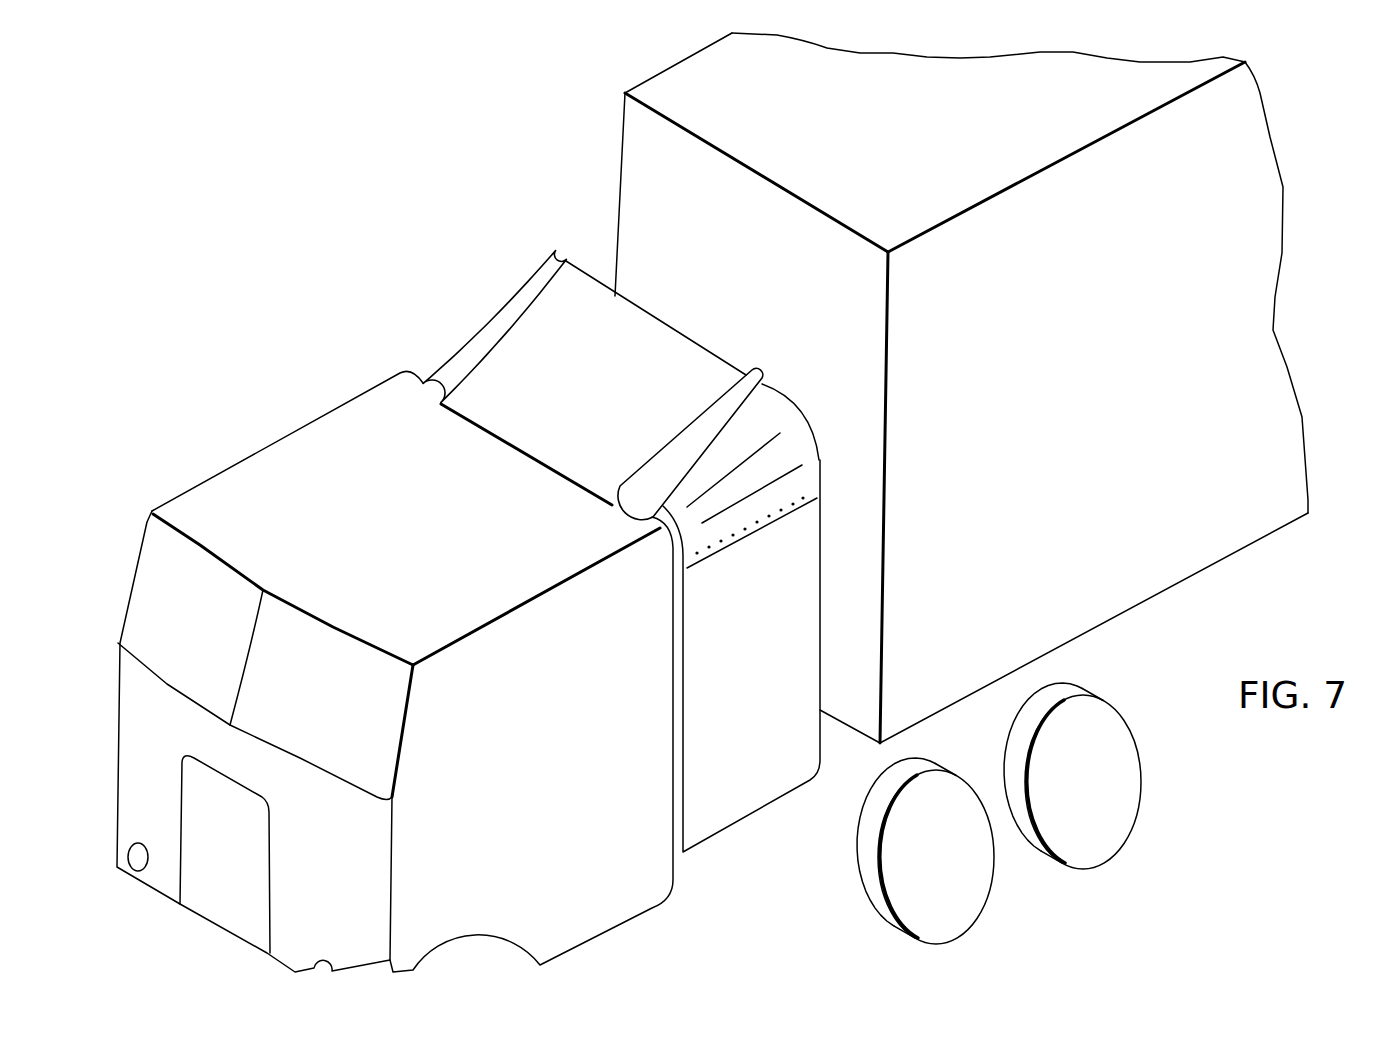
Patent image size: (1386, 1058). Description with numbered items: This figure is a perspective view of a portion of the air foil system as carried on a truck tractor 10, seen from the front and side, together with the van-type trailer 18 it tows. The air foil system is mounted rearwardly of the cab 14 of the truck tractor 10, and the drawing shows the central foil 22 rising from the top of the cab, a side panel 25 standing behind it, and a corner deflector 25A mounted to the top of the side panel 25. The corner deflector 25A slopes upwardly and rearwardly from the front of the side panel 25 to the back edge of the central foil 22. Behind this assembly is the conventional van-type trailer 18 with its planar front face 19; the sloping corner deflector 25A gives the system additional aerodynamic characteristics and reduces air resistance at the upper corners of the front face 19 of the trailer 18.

The truck tractor 10 is at (217, 460).
The cab 14 is at (368, 437).
The van-type trailer 18 is at (943, 388).
The front face 19 is at (640, 143).
The central air foil 22 is at (510, 340).
The side panel 25 is at (775, 778).
The corner deflector 25A is at (788, 438).